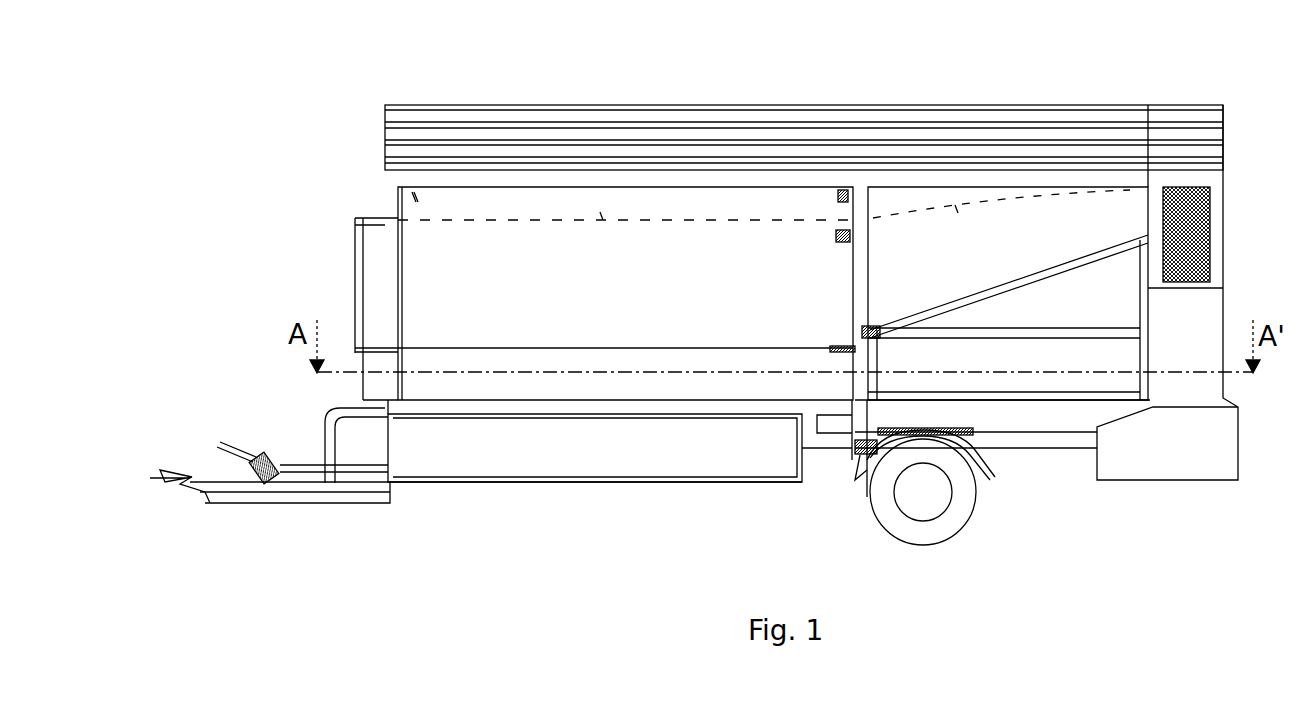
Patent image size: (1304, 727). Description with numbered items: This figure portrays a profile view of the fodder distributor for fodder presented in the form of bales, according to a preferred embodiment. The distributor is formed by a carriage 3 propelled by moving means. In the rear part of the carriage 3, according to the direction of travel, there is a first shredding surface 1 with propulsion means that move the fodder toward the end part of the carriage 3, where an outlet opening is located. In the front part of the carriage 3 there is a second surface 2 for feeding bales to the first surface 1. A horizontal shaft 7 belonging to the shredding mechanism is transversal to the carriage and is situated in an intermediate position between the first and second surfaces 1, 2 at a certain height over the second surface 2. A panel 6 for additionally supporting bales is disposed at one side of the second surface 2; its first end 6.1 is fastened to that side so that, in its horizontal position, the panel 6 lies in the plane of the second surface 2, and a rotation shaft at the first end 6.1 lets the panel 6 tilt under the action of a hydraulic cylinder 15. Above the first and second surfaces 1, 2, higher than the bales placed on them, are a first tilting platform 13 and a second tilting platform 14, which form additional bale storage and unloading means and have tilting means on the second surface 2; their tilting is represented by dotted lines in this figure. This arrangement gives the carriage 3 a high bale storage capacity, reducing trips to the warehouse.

The first shredding surface 1 is at (1037, 433).
The second surface 2 is at (630, 400).
The carriage 3 is at (235, 285).
The panel 6 is at (490, 380).
The first end of panel 6.1 is at (393, 483).
The horizontal shaft 7 is at (842, 237).
The first tilting platform 13 is at (981, 205).
The second tilting platform 14 is at (480, 222).
The hydraulic cylinder 15 is at (370, 358).